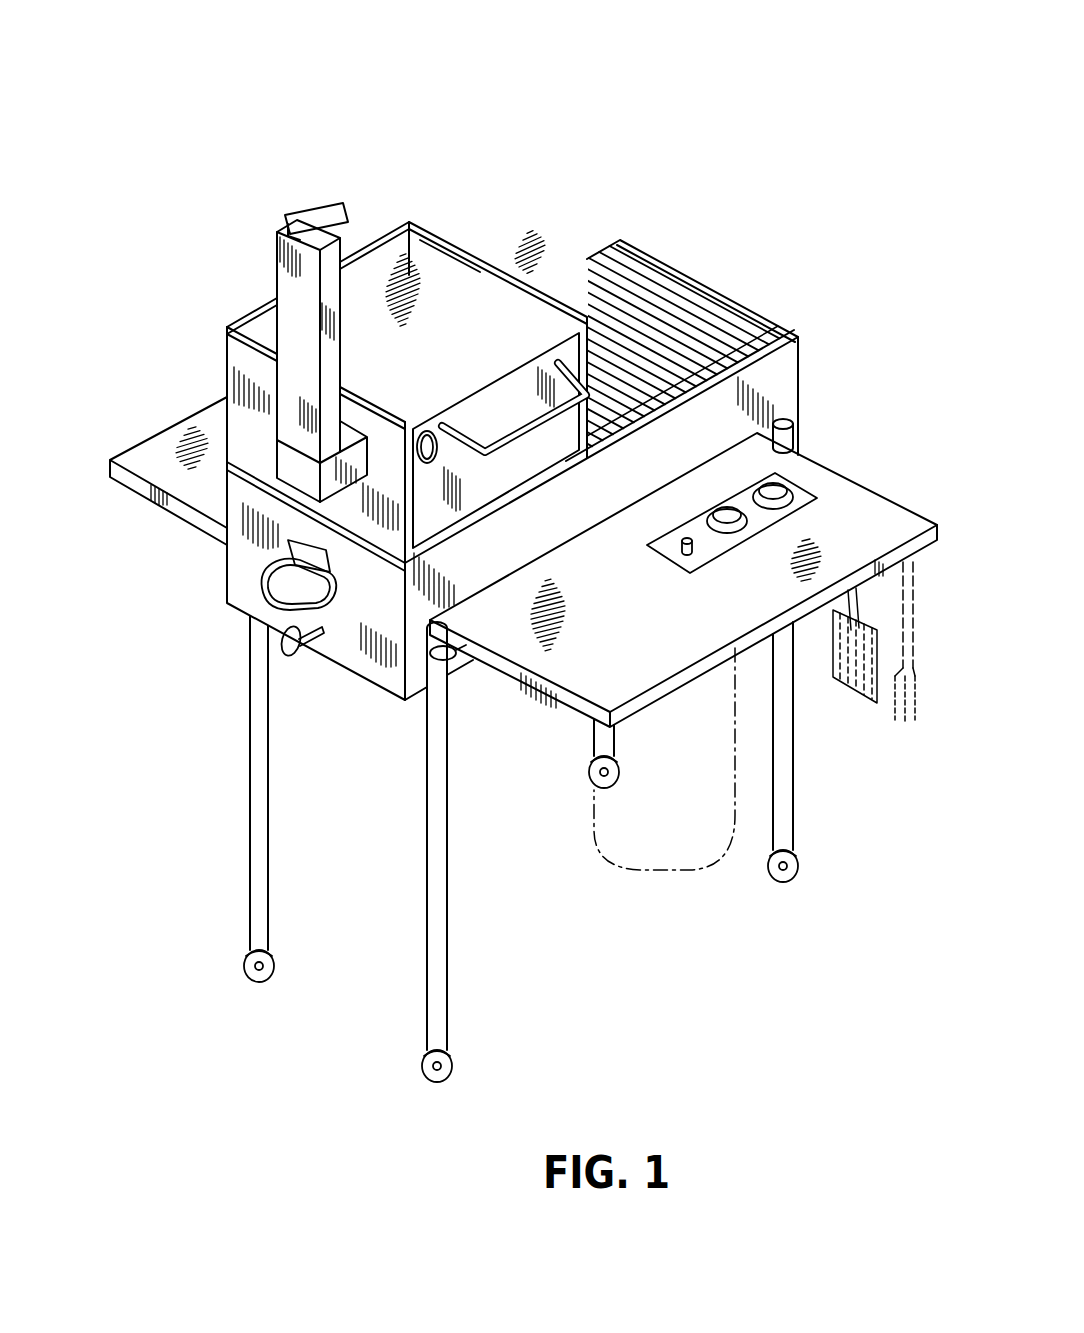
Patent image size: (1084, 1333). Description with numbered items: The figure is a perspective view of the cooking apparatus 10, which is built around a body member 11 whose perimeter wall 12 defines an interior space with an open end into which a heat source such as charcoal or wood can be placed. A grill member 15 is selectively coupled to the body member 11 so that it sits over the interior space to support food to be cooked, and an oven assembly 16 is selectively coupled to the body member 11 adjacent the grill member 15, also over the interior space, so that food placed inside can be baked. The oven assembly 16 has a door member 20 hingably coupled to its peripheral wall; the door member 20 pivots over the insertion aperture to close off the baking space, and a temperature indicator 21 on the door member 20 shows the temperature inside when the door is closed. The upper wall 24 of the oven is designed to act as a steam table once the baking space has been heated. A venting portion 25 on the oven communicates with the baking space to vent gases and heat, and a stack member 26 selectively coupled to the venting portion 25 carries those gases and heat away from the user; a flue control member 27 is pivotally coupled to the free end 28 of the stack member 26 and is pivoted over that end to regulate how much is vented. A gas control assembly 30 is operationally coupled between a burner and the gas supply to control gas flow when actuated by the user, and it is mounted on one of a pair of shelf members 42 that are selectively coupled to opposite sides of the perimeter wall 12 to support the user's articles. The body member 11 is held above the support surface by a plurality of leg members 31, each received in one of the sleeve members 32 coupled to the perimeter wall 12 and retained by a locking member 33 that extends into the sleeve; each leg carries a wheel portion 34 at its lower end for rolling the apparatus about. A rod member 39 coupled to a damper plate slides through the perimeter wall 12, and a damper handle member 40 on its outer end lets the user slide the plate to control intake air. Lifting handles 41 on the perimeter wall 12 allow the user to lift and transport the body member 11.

The cooking apparatus 10 is at (624, 158).
The body member 11 is at (812, 337).
The perimeter wall 12 is at (728, 308).
The grill member 15 is at (657, 268).
The oven assembly 16 is at (386, 212).
The door member 20 is at (503, 397).
The temperature indicator 21 is at (427, 432).
The upper wall 24 is at (394, 262).
The venting portion 25 is at (298, 477).
The stack member 26 is at (293, 313).
The flue control member 27 is at (316, 210).
The free end 28 is at (282, 258).
The gas control assembly 30 is at (805, 470).
The leg members 31 is at (258, 888).
The sleeve members 32 is at (425, 690).
The locking members 33 is at (445, 660).
The wheel portion 34 is at (264, 985).
The rod member 39 is at (320, 648).
The damper handle member 40 is at (283, 660).
The lifting handles 41 is at (272, 600).
The shelf members 42 is at (160, 458).